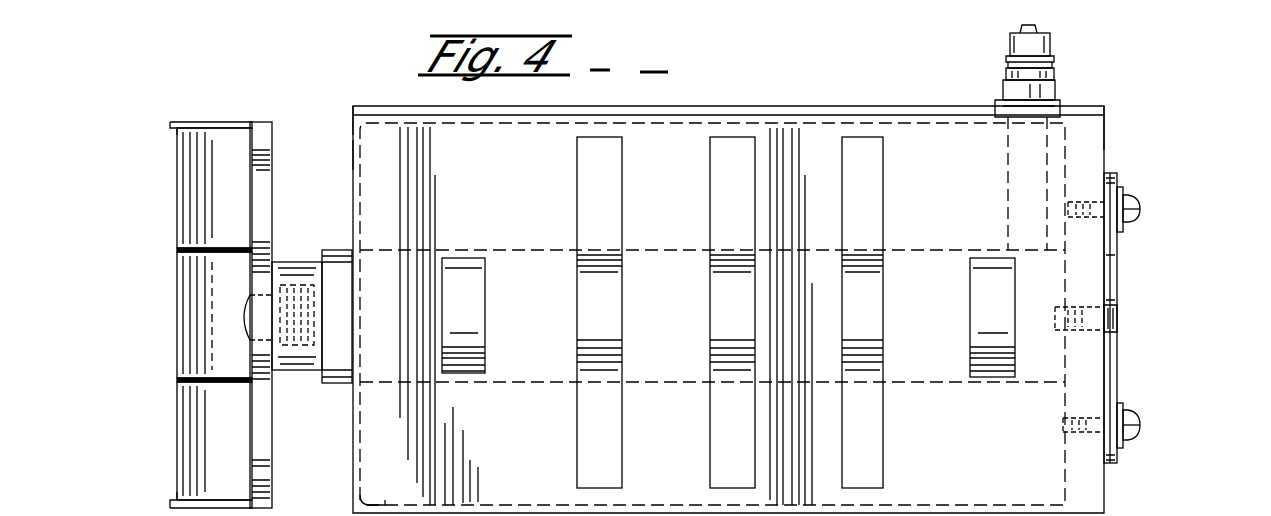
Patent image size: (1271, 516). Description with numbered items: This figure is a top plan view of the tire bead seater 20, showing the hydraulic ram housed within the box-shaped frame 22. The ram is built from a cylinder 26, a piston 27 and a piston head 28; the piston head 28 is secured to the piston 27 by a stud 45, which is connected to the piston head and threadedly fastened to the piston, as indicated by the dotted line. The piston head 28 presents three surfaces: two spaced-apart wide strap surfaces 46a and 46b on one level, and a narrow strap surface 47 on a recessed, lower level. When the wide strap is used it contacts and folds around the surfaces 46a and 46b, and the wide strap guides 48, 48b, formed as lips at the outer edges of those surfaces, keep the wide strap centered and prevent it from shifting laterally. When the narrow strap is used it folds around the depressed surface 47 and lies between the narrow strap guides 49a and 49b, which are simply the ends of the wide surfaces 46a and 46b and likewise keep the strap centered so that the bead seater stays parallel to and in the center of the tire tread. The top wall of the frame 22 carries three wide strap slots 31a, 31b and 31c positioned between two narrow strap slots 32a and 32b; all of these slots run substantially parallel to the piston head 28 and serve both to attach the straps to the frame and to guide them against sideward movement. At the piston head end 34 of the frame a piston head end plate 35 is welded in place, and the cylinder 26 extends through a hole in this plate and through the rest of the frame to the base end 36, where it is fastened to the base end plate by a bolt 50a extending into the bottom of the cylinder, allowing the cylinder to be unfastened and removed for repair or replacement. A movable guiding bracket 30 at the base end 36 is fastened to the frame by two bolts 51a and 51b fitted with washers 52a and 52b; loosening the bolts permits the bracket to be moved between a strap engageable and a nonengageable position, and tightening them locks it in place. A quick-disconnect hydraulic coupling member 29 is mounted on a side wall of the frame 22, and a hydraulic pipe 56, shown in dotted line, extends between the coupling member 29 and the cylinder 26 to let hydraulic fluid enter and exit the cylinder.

The tire bead seater 20 is at (1165, 312).
The frame 22 is at (806, 112).
The cylinder 26 is at (340, 250).
The piston 27 is at (292, 262).
The piston head 28 is at (261, 122).
The quick-disconnect hydraulic coupling member 29 is at (1055, 45).
The guiding bracket 30 is at (1125, 305).
The wide strap slot 31a is at (865, 440).
The wide strap slot 31b is at (730, 450).
The wide strap slot 31c is at (600, 430).
The narrow strap slot 32a is at (975, 296).
The narrow strap slot 32b is at (470, 302).
The piston head end 34 is at (353, 171).
The piston head end plate 35 is at (355, 125).
The base end 36 is at (1110, 144).
The stud 45 is at (296, 352).
The wide strap surface 46a is at (195, 185).
The wide strap surface 46b is at (195, 425).
The narrow strap surface 47 is at (195, 308).
The wide strap guide 48 is at (200, 124).
The wide strap guide 48b is at (170, 502).
The narrow strap guide 49a is at (177, 250).
The narrow strap guide 49b is at (177, 378).
The bolt 50a is at (1120, 316).
The bolt 51a is at (1140, 212).
The bolt 51b is at (1140, 428).
The washer 52a is at (1128, 235).
The washer 52b is at (1125, 405).
The hydraulic pipe 56 is at (1008, 198).